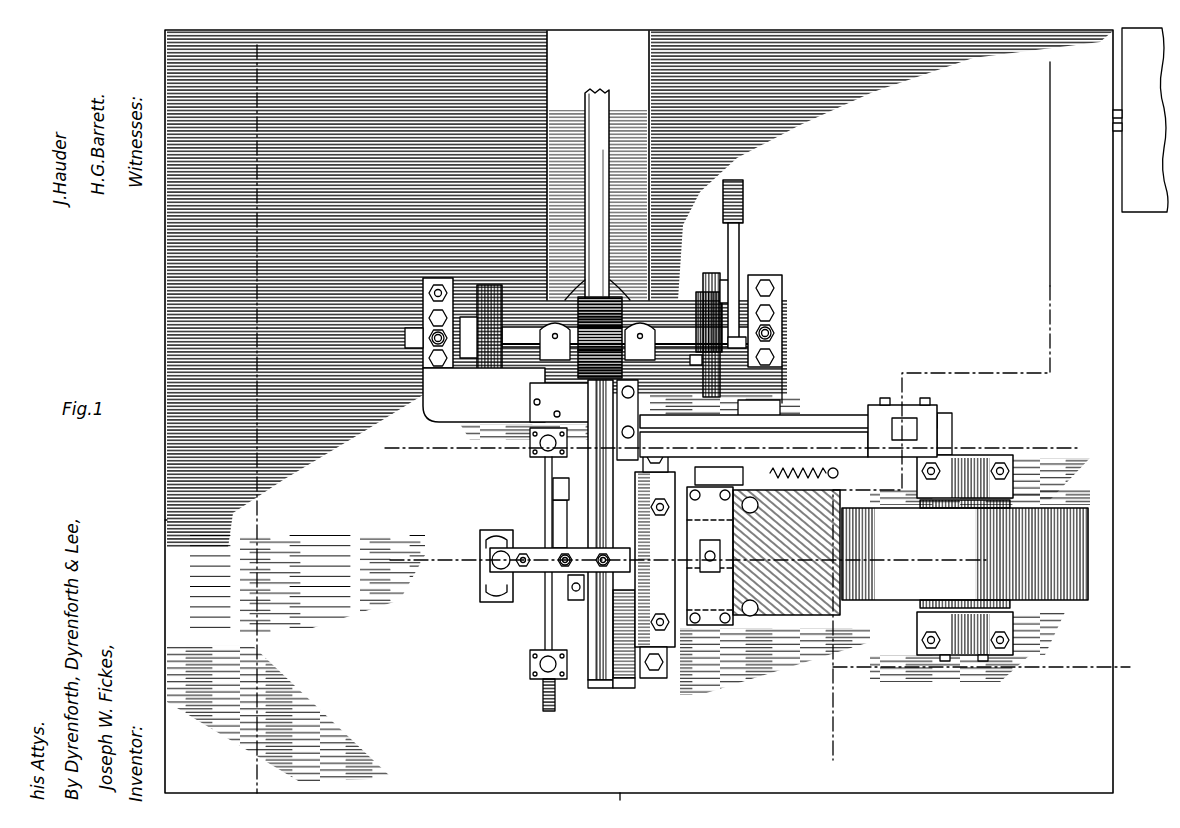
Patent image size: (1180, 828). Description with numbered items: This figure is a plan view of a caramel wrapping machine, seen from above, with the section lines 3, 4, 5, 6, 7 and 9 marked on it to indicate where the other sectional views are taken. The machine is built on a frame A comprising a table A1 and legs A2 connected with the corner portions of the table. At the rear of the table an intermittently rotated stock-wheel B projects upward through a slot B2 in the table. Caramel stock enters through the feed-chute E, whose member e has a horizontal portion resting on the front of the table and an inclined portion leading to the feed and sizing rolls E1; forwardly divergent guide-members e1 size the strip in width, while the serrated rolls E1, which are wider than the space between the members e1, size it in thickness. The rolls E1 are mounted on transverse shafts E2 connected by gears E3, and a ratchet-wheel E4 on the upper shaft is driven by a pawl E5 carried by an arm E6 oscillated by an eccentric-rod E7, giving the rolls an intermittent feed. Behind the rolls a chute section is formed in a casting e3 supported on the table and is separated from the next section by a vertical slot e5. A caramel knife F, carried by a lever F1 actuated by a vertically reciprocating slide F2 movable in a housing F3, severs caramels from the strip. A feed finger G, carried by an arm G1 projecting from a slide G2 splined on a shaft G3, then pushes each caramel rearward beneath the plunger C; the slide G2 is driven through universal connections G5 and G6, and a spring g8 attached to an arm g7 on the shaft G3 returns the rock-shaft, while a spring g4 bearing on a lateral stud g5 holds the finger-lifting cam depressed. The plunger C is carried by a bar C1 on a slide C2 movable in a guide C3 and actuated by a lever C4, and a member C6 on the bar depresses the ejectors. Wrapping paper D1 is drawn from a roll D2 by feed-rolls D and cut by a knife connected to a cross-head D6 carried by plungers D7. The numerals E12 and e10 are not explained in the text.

The frame A is at (165, 520).
The table A1 is at (639, 411).
The legs A2 is at (1140, 120).
The rotary stock-wheel B is at (595, 683).
The slot B2 is at (607, 691).
The plunger C is at (601, 570).
The bar C1 is at (535, 572).
The slide C2 is at (495, 558).
The guide C3 is at (485, 580).
The lever C4 is at (556, 505).
The ejector-depressing member C6 is at (565, 553).
The feed-rolls D is at (725, 556).
The wrapping paper D1 is at (786, 553).
The paper roll D2 is at (965, 558).
The cross-head D6 is at (655, 559).
The plungers D7 is at (659, 564).
The chute member e is at (598, 165).
The guide-members e1 is at (632, 283).
The casting e3 is at (578, 382).
The vertical slot e5 is at (700, 356).
The stop block e10 is at (719, 478).
The feed-chute E is at (575, 300).
The feed and sizing rolls E1 is at (578, 318).
The transverse shafts E2 is at (472, 328).
The gears E3 is at (488, 290).
The ratchet-wheel E4 is at (720, 360).
The pawl E5 is at (712, 290).
The arm E6 is at (698, 312).
The eccentric-rod E7 is at (743, 243).
The shaft end E12 is at (405, 340).
The caramel knife F is at (588, 473).
The lever F1 is at (838, 416).
The slide F2 is at (905, 428).
The housing F3 is at (952, 434).
The caramel feed finger G is at (628, 445).
The arm G1 is at (532, 398).
The slide G2 is at (510, 421).
The shaft G3 is at (553, 526).
The universal connection G5 is at (530, 443).
The universal connection G6 is at (532, 664).
The spring g4 is at (640, 448).
The lateral stud g5 is at (656, 454).
The arm g7 is at (576, 600).
The spring g8 is at (618, 626).
The section line 3 is at (1128, 652).
The section line 4 is at (278, 776).
The section line 5 is at (1066, 63).
The section line 6 is at (650, 795).
The section line 7 is at (380, 440).
The section line 9 is at (383, 548).